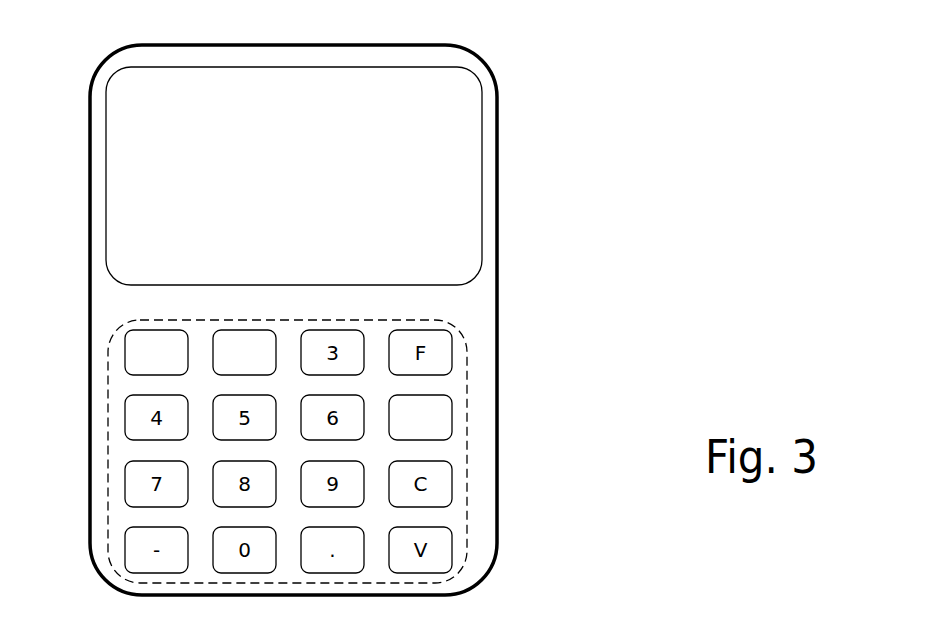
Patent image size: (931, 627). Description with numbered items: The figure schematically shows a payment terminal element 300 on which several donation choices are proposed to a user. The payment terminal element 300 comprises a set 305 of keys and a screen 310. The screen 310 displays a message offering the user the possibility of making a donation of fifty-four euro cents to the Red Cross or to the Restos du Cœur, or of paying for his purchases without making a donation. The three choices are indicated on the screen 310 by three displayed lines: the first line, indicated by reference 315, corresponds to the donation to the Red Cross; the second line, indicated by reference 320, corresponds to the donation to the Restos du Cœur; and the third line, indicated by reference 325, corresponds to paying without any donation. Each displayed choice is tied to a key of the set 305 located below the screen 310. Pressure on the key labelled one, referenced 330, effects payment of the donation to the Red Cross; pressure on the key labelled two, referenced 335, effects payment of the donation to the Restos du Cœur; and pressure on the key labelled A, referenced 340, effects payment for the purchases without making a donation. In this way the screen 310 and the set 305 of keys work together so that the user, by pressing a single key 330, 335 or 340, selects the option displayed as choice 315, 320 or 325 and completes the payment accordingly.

The payment terminal element 300 is at (497, 508).
The set of keys 305 is at (467, 452).
The screen 310 is at (107, 226).
The donation choice to the Red Cross 315 is at (375, 178).
The donation choice to the Restos du Cœur 320 is at (398, 222).
The no-donation choice 325 is at (298, 242).
The key 1 330 is at (125, 352).
The key 2 335 is at (260, 330).
The key A 340 is at (453, 415).